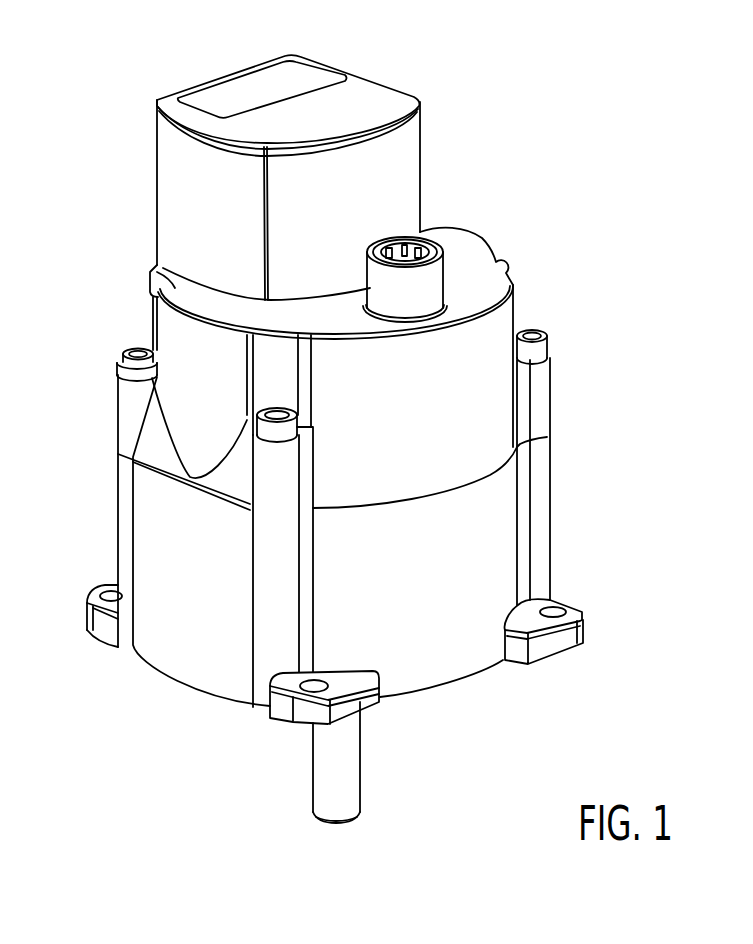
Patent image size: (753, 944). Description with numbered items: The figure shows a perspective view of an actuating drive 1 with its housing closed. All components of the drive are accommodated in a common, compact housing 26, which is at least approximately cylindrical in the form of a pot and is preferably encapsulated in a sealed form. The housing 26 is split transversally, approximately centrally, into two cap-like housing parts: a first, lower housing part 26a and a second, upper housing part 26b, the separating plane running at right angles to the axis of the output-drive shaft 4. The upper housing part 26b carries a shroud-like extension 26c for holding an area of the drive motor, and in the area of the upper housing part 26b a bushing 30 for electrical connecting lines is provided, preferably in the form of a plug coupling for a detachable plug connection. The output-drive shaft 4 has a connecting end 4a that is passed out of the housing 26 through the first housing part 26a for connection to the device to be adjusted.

The actuating drive 1 is at (142, 725).
The output-drive shaft 4 is at (317, 748).
The connecting end 4a is at (350, 777).
The housing 26 is at (556, 425).
The first housing part 26a is at (450, 643).
The second housing part 26b is at (473, 260).
The shroud-like extension 26c is at (394, 88).
The bushing 30 is at (419, 241).